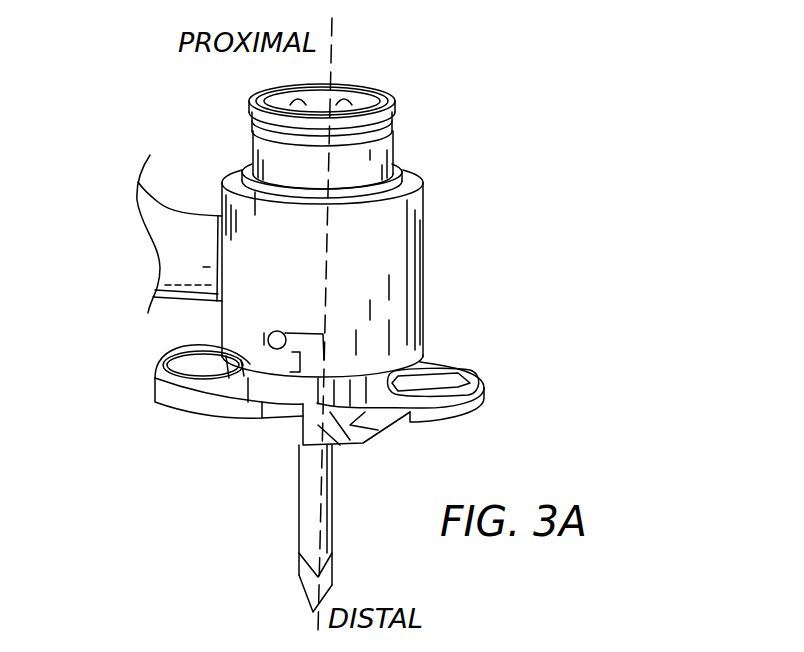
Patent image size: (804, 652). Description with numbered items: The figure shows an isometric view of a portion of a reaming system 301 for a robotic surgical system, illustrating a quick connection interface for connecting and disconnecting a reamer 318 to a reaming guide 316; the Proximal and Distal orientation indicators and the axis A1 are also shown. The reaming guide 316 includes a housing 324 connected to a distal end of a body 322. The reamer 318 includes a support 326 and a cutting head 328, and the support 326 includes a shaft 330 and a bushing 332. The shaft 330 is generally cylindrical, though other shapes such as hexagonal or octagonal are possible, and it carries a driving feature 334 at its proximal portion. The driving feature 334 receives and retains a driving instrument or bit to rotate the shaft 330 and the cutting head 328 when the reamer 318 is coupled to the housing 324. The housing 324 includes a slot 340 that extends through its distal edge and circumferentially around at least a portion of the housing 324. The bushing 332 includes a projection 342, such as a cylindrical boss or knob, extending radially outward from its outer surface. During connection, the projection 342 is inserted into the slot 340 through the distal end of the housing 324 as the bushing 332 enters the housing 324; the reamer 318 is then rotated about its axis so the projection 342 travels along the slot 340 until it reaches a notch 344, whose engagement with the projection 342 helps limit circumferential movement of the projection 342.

The reaming system 301 is at (408, 49).
The reaming guide 316 is at (153, 105).
The reamer 318 is at (476, 428).
The body 322 is at (178, 245).
The housing 324 is at (398, 240).
The support 326 is at (418, 361).
The cutting head 328 is at (299, 496).
The shaft 330 is at (386, 430).
The bushing 332 is at (400, 186).
The driving feature 334 is at (384, 100).
The slot 340 is at (304, 348).
The projection 342 is at (277, 349).
The notch 344 is at (290, 351).
The axis A1 is at (313, 612).